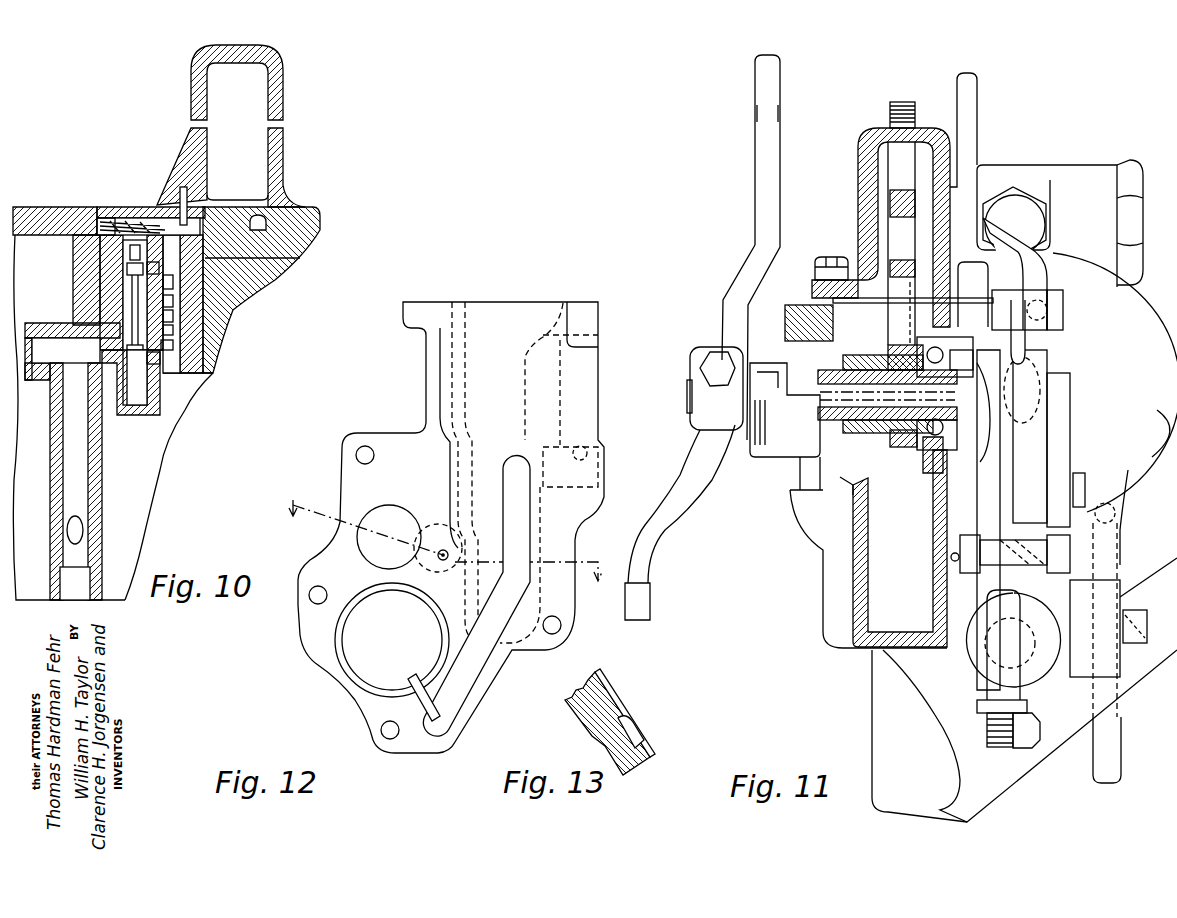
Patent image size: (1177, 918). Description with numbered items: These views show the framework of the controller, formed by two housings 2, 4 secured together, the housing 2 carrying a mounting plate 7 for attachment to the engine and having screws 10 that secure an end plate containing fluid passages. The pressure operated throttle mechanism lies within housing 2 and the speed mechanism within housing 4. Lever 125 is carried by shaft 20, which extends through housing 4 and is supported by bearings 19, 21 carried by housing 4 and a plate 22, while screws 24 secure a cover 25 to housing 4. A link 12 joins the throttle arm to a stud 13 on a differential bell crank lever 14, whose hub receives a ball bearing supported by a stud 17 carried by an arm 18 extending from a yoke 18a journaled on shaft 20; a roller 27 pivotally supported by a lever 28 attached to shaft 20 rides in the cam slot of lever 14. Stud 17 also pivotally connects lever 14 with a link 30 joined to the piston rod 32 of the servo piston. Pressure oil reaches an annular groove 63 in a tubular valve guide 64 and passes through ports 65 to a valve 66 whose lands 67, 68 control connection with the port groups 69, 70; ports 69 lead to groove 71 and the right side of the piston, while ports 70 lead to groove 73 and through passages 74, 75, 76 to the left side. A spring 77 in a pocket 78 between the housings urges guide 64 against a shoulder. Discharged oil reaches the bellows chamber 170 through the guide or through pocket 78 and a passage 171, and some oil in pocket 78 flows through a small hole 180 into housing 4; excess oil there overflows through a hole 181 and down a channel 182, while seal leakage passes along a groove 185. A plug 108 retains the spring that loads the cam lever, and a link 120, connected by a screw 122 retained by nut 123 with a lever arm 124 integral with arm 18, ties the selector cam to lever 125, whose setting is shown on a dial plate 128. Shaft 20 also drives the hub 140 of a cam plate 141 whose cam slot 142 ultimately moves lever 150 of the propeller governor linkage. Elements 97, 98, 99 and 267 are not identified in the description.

In FIG. 10, the housing 2 is at (215, 380).
In FIG. 11, the housing 2 is at (1068, 165).
In FIG. 10, the housing 4 is at (280, 100).
In FIG. 12, the housing 4 is at (513, 300).
In FIG. 13, the housing 4 is at (608, 700).
In FIG. 11, the housing 4 is at (847, 578).
In FIG. 11, the mounting plate 7 is at (1048, 787).
In FIG. 12, the screws 10 is at (437, 555).
In FIG. 11, the link 12 is at (990, 727).
In FIG. 12, the stud 13 is at (398, 656).
In FIG. 11, the stud 13 is at (960, 548).
In FIG. 11, the differential bell crank lever 14 is at (1063, 428).
In FIG. 11, the stud 17 is at (985, 617).
In FIG. 11, the arm 18 is at (977, 490).
In FIG. 11, the yoke 18a is at (770, 462).
In FIG. 11, the bearing 19 is at (945, 445).
In FIG. 11, the shaft 20 is at (690, 397).
In FIG. 11, the bearing 21 is at (885, 352).
In FIG. 11, the plate 22 is at (790, 305).
In FIG. 11, the screws 24 is at (828, 257).
In FIG. 11, the cover 25 is at (858, 158).
In FIG. 11, the roller 27 is at (1085, 478).
In FIG. 11, the lever 28 is at (1030, 462).
In FIG. 11, the link 30 is at (985, 640).
In FIG. 11, the piston rod 32 is at (1013, 645).
In FIG. 10, the annular groove 63 is at (170, 302).
In FIG. 10, the tubular valve guide 64 is at (172, 247).
In FIG. 10, the ports 65 is at (170, 316).
In FIG. 10, the valve 66 is at (135, 412).
In FIG. 10, the land 67 is at (128, 268).
In FIG. 10, the land 68 is at (165, 358).
In FIG. 10, the valve guide ports 69 is at (170, 282).
In FIG. 10, the valve guide ports 70 is at (170, 344).
In FIG. 10, the valve guide groove 71 is at (160, 268).
In FIG. 10, the valve guide groove 73 is at (170, 330).
In FIG. 10, the passage 74 is at (55, 340).
In FIG. 10, the passage 75 is at (65, 436).
In FIG. 10, the passage 76 is at (67, 530).
In FIG. 10, the spring 77 is at (140, 218).
In FIG. 10, the pocket 78 is at (103, 218).
In FIG. 12, the pocket 78 is at (390, 520).
In FIG. 11, the hole 97 is at (1116, 511).
In FIG. 11, the pipe 98 is at (1118, 700).
In FIG. 11, the pipe end 99 is at (1125, 758).
In FIG. 11, the plug 108 is at (1037, 222).
In FIG. 11, the link 120 is at (1007, 225).
In FIG. 11, the screw 122 is at (997, 285).
In FIG. 11, the nut 123 is at (1063, 305).
In FIG. 11, the lever arm 124 is at (1010, 340).
In FIG. 11, the main control lever 125 is at (680, 487).
In FIG. 11, the dial plate 128 is at (958, 68).
In FIG. 11, the hub 140 is at (900, 447).
In FIG. 11, the cam plate 141 is at (908, 175).
In FIG. 11, the cam slot 142 is at (880, 300).
In FIG. 11, the lever 150 is at (757, 160).
In FIG. 10, the bellows chamber 170 is at (183, 412).
In FIG. 10, the passage 171 is at (195, 258).
In FIG. 10, the small hole 180 is at (186, 195).
In FIG. 12, the small hole 180 is at (448, 556).
In FIG. 11, the small hole 180 is at (950, 558).
In FIG. 12, the hole 181 is at (507, 483).
In FIG. 10, the channel 182 is at (290, 203).
In FIG. 12, the channel 182 is at (522, 531).
In FIG. 13, the channel 182 is at (640, 738).
In FIG. 12, the groove 185 is at (415, 706).
In FIG. 13, the groove 185 is at (632, 716).
In FIG. 11, the nut 267 is at (1143, 212).